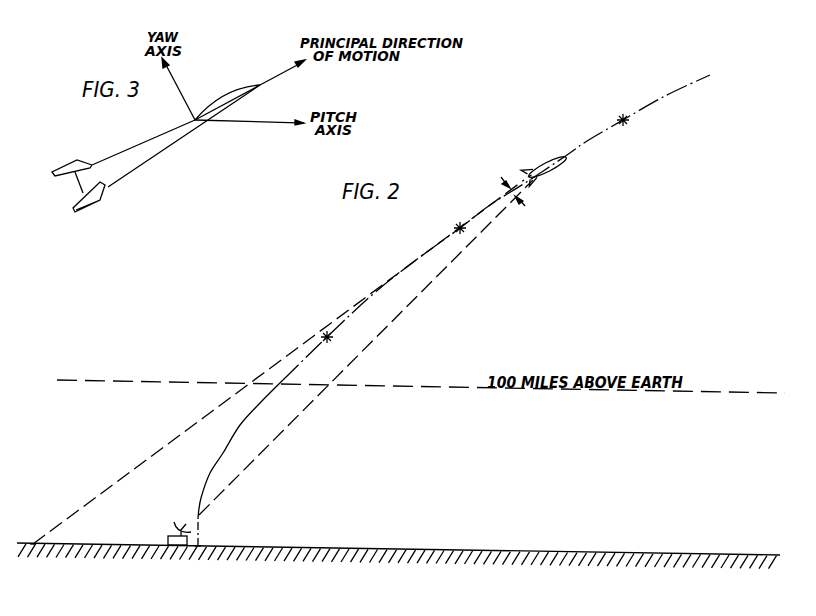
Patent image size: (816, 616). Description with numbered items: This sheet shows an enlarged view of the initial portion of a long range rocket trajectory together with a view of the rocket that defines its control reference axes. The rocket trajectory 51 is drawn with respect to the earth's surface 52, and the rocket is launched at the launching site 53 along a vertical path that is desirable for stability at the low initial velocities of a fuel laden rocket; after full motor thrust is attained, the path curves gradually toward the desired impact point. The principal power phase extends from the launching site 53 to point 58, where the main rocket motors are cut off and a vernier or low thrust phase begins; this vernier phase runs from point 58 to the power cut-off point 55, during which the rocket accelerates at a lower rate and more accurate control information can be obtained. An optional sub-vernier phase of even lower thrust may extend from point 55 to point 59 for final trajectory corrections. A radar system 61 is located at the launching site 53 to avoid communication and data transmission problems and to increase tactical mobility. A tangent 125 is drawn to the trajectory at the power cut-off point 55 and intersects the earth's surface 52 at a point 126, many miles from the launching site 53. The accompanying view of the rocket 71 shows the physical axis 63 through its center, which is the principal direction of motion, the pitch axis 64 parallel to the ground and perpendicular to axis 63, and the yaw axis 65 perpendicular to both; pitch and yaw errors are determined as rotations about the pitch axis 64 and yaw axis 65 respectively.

In FIG. 2, the rocket trajectory 51 is at (412, 263).
In FIG. 2, the earth's surface 52 is at (356, 548).
In FIG. 2, the launching site 53 is at (199, 545).
In FIG. 2, the power cut-off point 55 is at (457, 223).
In FIG. 2, the end point of principal power phase 58 is at (323, 328).
In FIG. 2, the end point of sub-vernier phase 59 is at (624, 113).
In FIG. 2, the radar system 61 is at (168, 539).
In FIG. 3, the physical axis 63 is at (230, 100).
In FIG. 3, the pitch axis 64 is at (247, 123).
In FIG. 3, the yaw axis 65 is at (179, 88).
In FIG. 3, the rocket 71 is at (172, 150).
In FIG. 2, the rocket 71 is at (543, 167).
In FIG. 2, the tangent 125 is at (168, 442).
In FIG. 2, the intersection point 126 is at (33, 541).